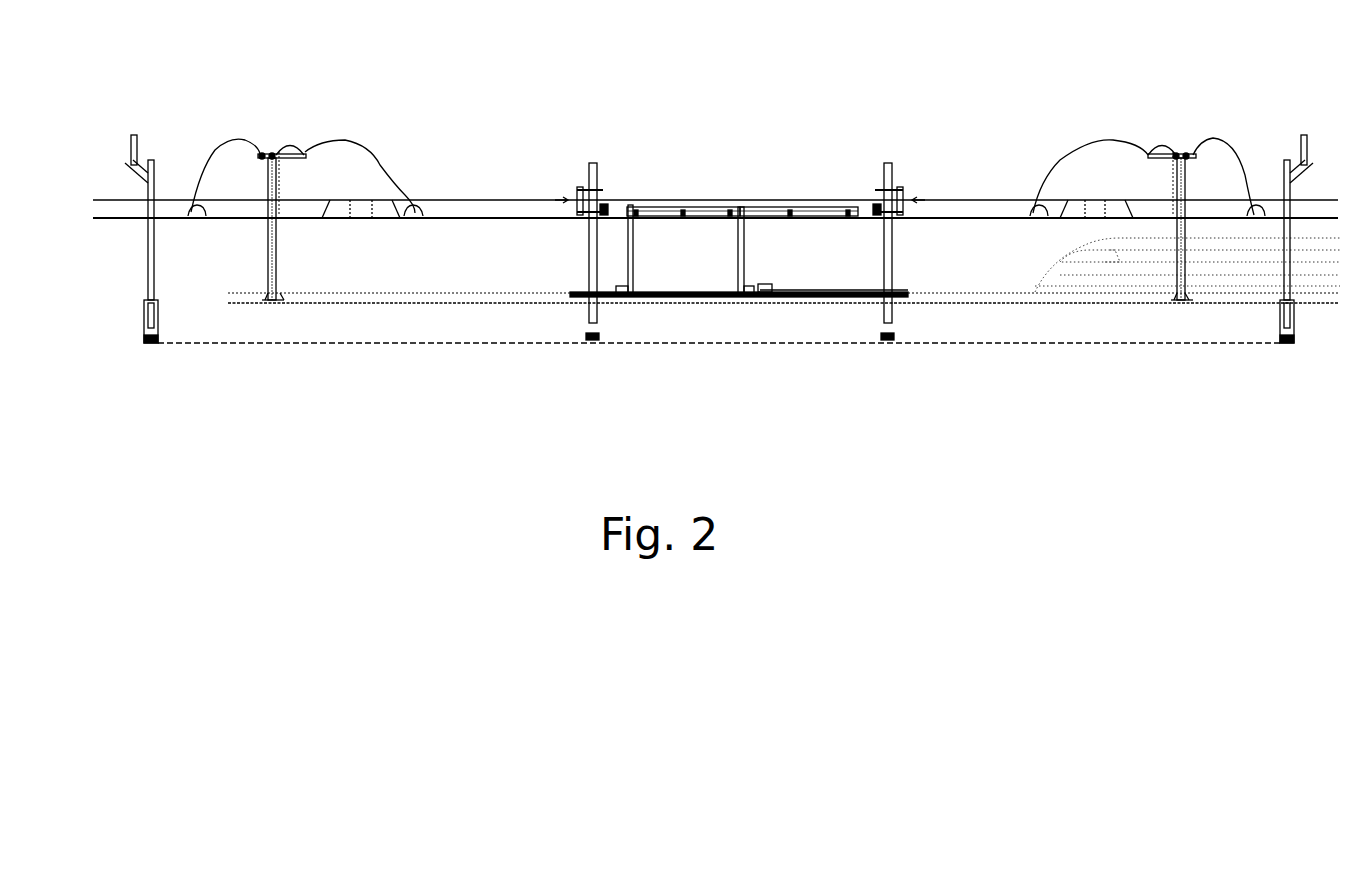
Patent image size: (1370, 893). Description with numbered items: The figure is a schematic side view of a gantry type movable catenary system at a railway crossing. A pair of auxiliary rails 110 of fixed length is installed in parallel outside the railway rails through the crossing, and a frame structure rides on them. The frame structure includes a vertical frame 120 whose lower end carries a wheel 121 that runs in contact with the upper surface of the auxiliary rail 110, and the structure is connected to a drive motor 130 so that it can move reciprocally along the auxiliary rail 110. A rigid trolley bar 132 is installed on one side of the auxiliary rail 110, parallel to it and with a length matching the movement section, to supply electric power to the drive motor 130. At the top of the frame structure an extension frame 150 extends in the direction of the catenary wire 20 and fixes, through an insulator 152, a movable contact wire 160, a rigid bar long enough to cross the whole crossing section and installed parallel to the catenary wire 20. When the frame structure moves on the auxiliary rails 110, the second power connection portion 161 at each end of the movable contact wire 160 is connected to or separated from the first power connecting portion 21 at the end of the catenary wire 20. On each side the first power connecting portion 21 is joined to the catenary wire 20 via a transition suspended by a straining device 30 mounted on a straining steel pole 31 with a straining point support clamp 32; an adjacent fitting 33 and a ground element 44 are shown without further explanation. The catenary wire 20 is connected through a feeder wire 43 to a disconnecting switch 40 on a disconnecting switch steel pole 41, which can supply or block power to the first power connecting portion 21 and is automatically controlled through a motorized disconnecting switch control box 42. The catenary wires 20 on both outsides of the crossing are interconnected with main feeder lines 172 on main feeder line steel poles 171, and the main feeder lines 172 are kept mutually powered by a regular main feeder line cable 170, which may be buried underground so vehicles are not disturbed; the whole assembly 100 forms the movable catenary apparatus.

The catenary wire 20 is at (438, 222).
The first power connecting portion 21 is at (625, 205).
The straining device 30 is at (578, 188).
The straining steel pole 31 is at (591, 163).
The straining point support clamp 32 is at (590, 222).
The connecting member 33 is at (552, 222).
The disconnecting switch 40 is at (268, 150).
The disconnecting switch steel pole 41 is at (266, 244).
The motorized disconnecting switch control box 42 is at (280, 272).
The feeder wire 43 is at (222, 140).
The ground block 44 is at (358, 222).
The platform frame 100 is at (739, 252).
The auxiliary rail 110 is at (686, 298).
The vertical frame 120 is at (738, 262).
The wheel 121 is at (630, 300).
The drive motor 130 is at (768, 292).
The rigid trolley bar 132 is at (832, 298).
The extension frame 150 is at (799, 175).
The insulator 152 is at (838, 207).
The movable contact wire 160 is at (758, 222).
The second power connection portion 161 is at (642, 208).
The regular main feeder line cable 170 is at (355, 346).
The main feeder line steel pole 171 is at (155, 268).
The main feeder line 172 is at (115, 215).